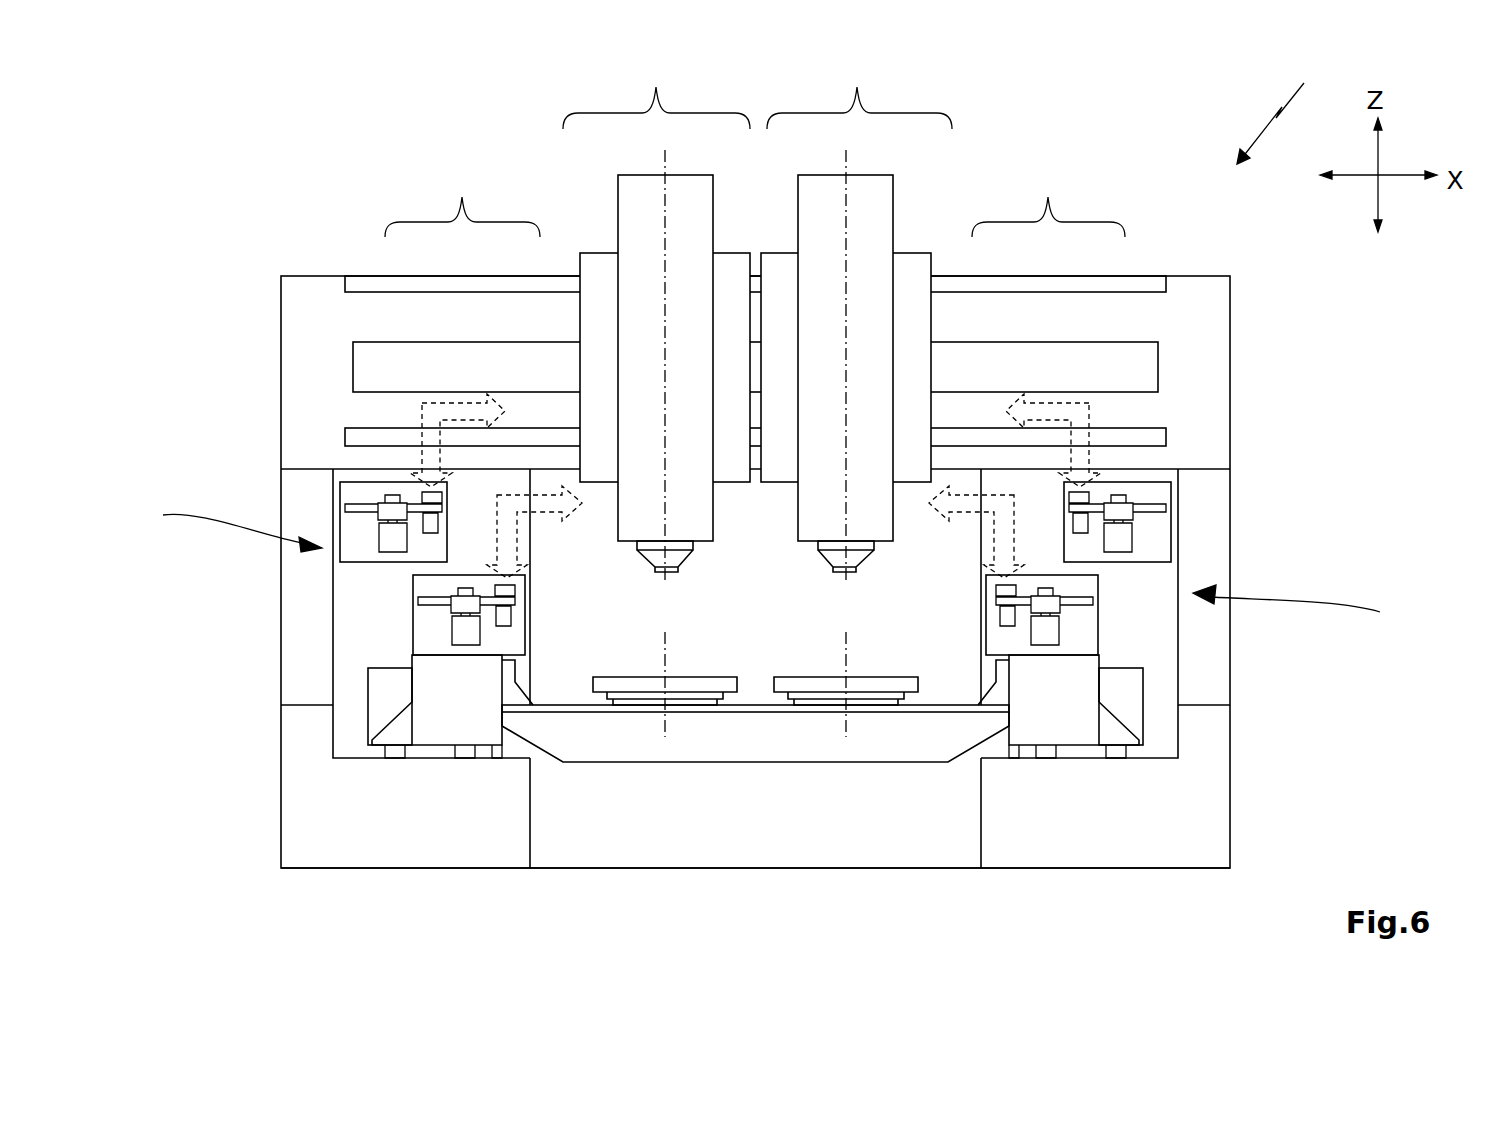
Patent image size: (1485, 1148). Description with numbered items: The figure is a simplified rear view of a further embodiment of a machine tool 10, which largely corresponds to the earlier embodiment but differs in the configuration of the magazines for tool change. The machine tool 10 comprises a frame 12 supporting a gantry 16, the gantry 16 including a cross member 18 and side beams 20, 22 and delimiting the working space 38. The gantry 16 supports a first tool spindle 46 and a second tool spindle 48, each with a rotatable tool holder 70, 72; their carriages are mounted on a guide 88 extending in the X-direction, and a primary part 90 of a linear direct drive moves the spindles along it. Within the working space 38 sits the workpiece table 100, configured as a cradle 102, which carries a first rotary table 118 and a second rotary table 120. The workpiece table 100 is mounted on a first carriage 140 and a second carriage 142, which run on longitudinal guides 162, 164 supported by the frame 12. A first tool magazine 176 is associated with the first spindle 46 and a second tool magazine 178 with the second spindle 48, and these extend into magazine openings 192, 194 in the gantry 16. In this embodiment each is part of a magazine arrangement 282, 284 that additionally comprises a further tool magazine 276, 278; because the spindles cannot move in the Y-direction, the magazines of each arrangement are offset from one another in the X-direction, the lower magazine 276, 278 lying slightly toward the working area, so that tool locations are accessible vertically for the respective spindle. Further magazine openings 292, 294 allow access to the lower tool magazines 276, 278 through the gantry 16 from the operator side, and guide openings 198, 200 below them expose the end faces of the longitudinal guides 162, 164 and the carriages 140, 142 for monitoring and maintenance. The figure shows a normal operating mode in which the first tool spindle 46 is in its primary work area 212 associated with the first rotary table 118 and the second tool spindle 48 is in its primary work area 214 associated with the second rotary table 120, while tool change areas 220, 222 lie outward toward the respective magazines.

The machine tool 10 is at (1285, 109).
The frame 12 is at (1233, 855).
The gantry 16 is at (1193, 328).
The cross member 18 is at (520, 318).
The side beam 20 is at (298, 658).
The side beam 22 is at (1220, 692).
The working space 38 is at (745, 619).
The first tool spindle 46 is at (685, 385).
The second tool spindle 48 is at (872, 413).
The tool holder 70 is at (650, 557).
The tool holder 72 is at (860, 557).
The guide 88 is at (407, 288).
The primary part of a linear direct drive 90 is at (1083, 362).
The workpiece table 100 is at (775, 730).
The cradle 102 is at (755, 737).
The first rotary table 118 is at (638, 685).
The second rotary table 120 is at (872, 685).
The first carriage 140 is at (435, 722).
The second carriage 142 is at (1088, 725).
The longitudinal guide 162 is at (438, 755).
The longitudinal guide 164 is at (1068, 750).
The first tool magazine 176 is at (380, 500).
The second tool magazine 178 is at (1132, 533).
The magazine opening 192 is at (360, 527).
The magazine opening 194 is at (1150, 487).
The guide opening 198 is at (383, 690).
The guide opening 200 is at (1122, 687).
The primary work area 212 is at (656, 89).
The primary work area 214 is at (859, 85).
The tool change area 220 is at (462, 195).
The tool change area 222 is at (1048, 197).
The further tool magazine 276 is at (450, 593).
The further tool magazine 278 is at (1060, 630).
The magazine arrangement 282 is at (214, 521).
The magazine arrangement 284 is at (1306, 606).
The further magazine opening 292 is at (435, 623).
The further magazine opening 294 is at (1088, 583).